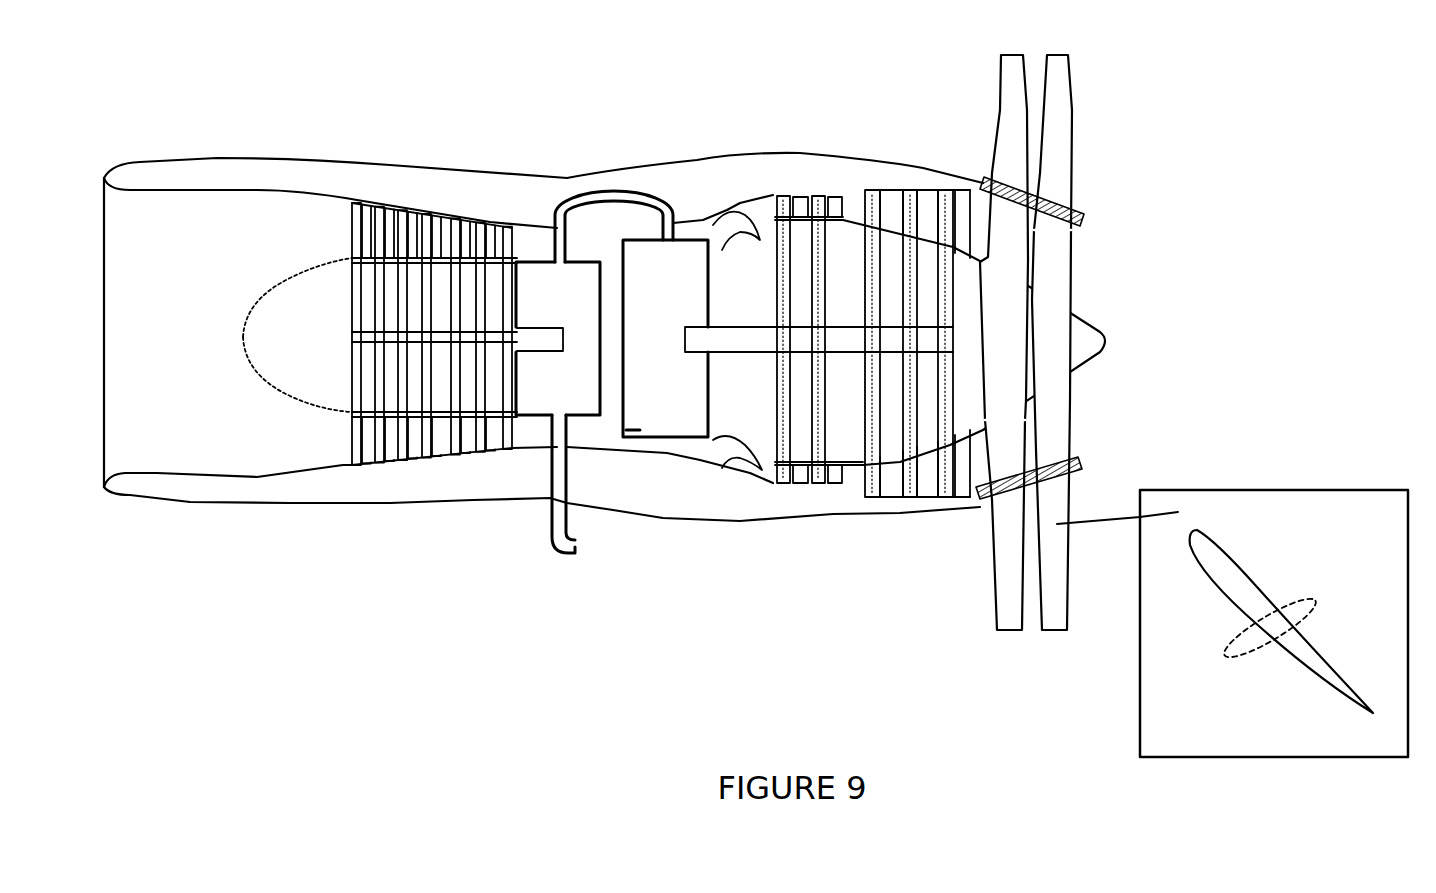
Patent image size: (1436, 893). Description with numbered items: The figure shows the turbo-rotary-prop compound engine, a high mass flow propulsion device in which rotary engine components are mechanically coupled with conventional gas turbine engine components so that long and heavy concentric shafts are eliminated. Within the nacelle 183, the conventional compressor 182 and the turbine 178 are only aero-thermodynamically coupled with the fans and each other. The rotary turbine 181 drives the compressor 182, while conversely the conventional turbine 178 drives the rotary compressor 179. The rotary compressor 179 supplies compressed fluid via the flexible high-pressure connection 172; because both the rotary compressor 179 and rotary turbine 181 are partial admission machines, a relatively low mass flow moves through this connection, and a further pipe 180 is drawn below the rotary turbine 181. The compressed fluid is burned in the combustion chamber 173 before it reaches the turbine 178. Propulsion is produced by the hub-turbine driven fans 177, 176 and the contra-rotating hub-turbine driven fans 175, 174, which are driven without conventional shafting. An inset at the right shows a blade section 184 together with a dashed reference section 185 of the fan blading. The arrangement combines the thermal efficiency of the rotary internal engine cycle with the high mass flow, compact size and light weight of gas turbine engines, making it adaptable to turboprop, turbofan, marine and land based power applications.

The flexible high-pressure connection 172 is at (618, 203).
The combustion chamber 173 is at (740, 233).
The contra-rotating hub-turbine driven fan 174 is at (1053, 157).
The contra-rotating hub-turbine driven fan 175 is at (1055, 262).
The hub-turbine driven fan 176 is at (1007, 540).
The hub-turbine driven fan 177 is at (1007, 450).
The turbine 178 is at (787, 473).
The rotary compressor 179 is at (668, 408).
The fuel pipe 180 is at (575, 547).
The rotary turbine 181 is at (560, 385).
The compressor 182 is at (353, 462).
The nacelle 183 is at (243, 428).
The blade airfoil section 184 is at (1297, 617).
The blade reference section 185 is at (1255, 600).